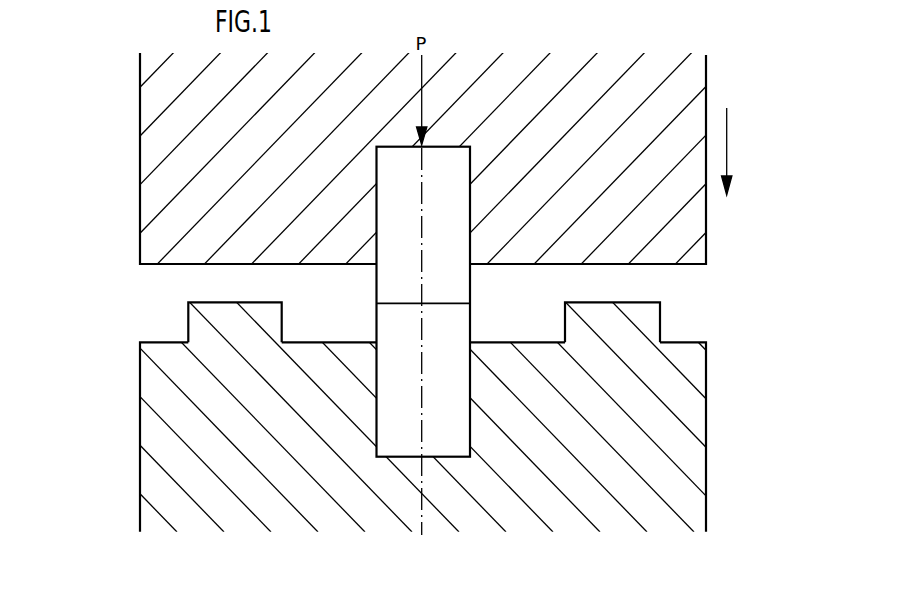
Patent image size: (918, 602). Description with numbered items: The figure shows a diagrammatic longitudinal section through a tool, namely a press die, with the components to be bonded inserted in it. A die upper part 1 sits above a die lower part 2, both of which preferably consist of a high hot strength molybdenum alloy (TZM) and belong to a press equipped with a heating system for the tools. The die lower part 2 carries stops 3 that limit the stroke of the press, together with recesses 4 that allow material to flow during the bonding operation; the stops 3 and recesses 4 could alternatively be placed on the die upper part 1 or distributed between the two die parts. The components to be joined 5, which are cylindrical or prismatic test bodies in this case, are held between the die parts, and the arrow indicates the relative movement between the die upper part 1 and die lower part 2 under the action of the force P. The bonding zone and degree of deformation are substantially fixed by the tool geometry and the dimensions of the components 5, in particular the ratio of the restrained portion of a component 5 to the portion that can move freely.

The die upper part 1 is at (173, 120).
The die lower part 2 is at (203, 440).
The stops 3 is at (188, 329).
The recesses 4 is at (323, 316).
The components to be joined 5 is at (376, 274).